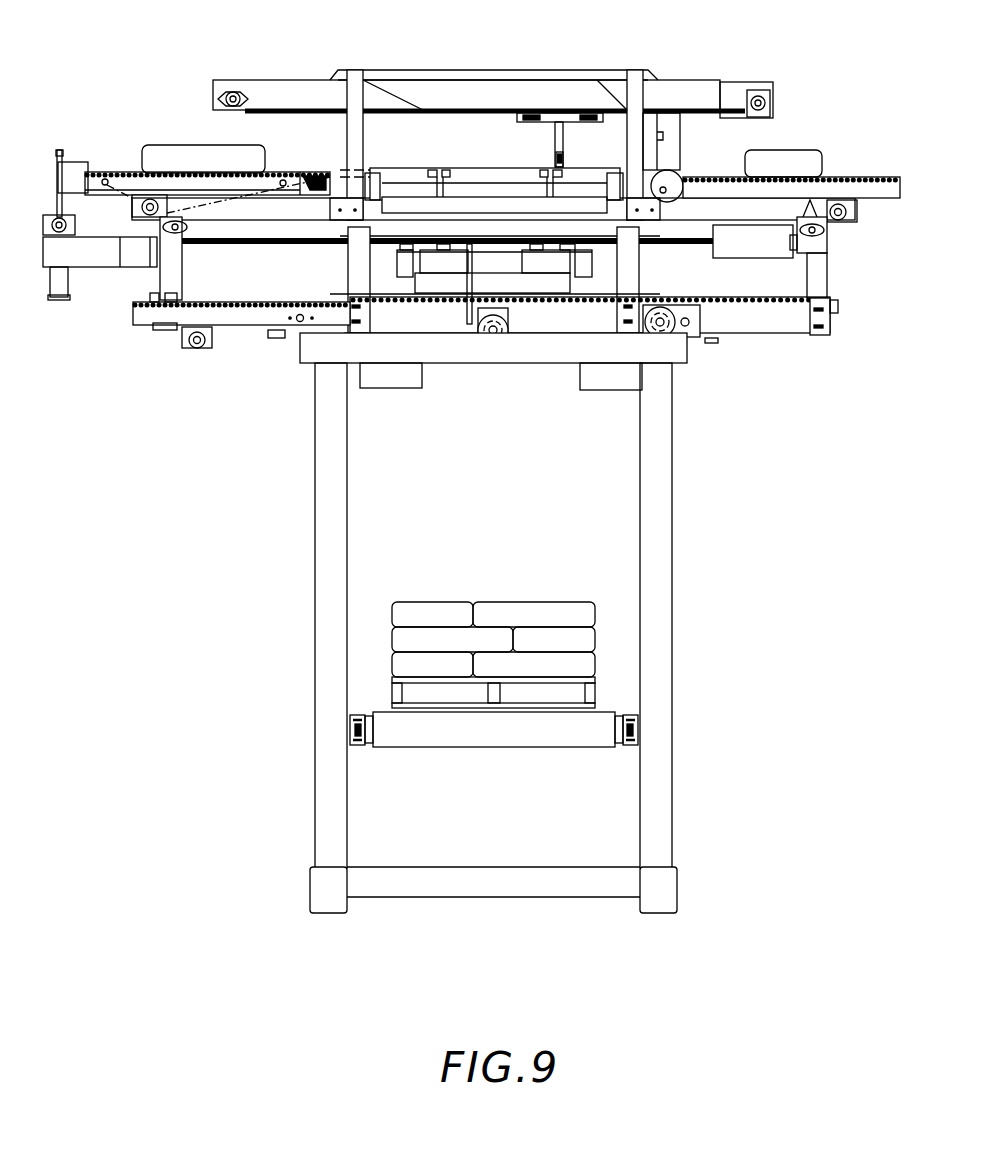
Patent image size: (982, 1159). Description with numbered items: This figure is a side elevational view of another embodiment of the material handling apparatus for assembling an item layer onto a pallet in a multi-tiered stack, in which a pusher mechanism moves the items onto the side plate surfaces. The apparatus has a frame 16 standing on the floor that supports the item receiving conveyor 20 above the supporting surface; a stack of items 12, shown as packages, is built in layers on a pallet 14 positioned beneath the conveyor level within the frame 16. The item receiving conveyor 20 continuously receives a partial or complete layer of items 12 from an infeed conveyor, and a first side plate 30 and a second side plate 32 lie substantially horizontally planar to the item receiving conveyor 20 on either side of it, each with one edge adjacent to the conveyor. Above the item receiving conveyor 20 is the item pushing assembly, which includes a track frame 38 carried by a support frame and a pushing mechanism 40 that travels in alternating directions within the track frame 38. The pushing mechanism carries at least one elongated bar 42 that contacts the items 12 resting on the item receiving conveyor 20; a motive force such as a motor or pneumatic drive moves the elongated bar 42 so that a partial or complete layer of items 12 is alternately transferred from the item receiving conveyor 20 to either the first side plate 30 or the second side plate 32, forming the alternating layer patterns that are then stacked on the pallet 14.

The items 12 is at (463, 602).
The pallet 14 is at (428, 690).
The frame 16 is at (672, 490).
The item receiving conveyor 20 is at (430, 168).
The first side plate 30 is at (117, 170).
The second side plate 32 is at (863, 177).
The track frame 38 is at (303, 72).
The pushing mechanism 40 is at (555, 147).
The elongated bar 42 is at (565, 157).